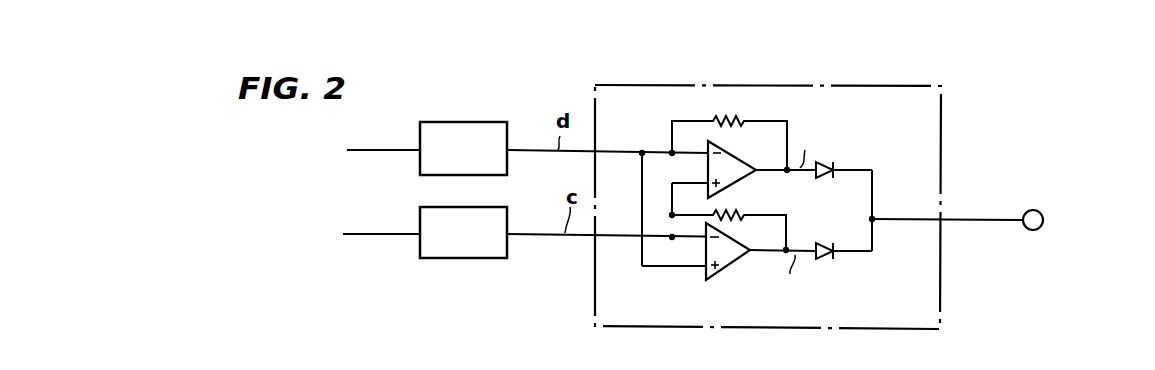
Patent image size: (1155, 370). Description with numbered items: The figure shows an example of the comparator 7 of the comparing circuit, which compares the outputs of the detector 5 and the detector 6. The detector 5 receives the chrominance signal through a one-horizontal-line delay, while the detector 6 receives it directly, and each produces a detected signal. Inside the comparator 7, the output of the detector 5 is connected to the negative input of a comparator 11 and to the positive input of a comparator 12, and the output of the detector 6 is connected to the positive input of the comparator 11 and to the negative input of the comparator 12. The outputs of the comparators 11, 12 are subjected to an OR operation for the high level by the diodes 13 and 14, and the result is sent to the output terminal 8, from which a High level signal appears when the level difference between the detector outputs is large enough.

The detector 5 is at (508, 130).
The detector 6 is at (507, 221).
The comparator 7 is at (943, 147).
The output terminal 8 is at (1045, 208).
The comparator 11 is at (744, 160).
The comparator 12 is at (745, 250).
The diode 13 is at (829, 158).
The diode 14 is at (827, 243).